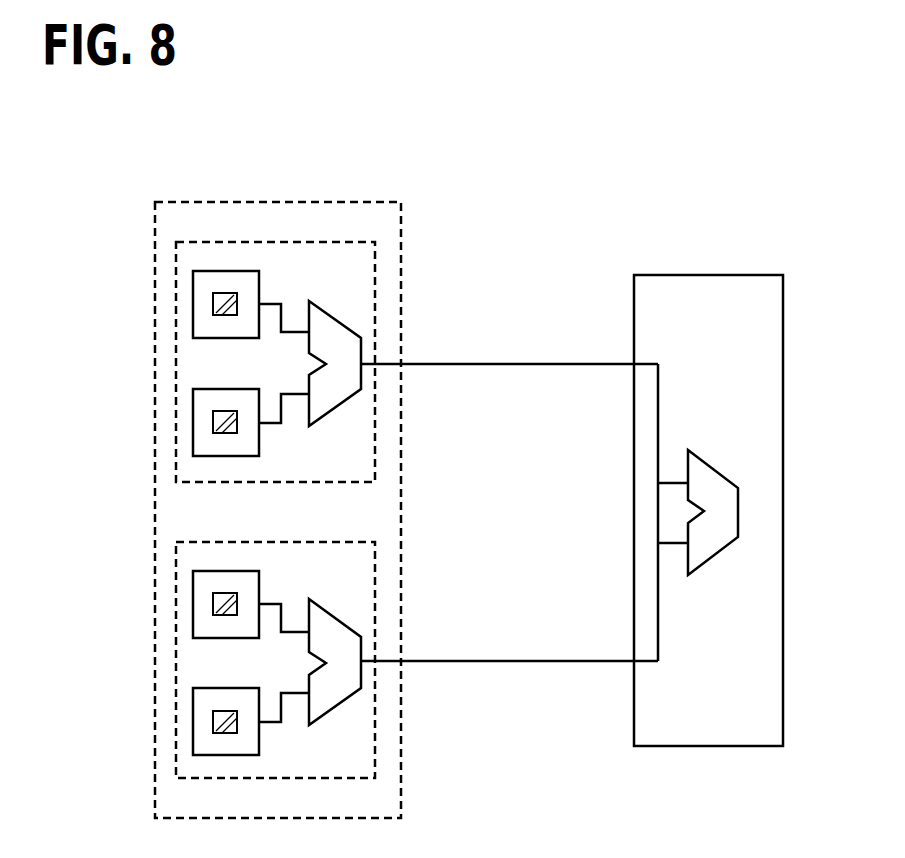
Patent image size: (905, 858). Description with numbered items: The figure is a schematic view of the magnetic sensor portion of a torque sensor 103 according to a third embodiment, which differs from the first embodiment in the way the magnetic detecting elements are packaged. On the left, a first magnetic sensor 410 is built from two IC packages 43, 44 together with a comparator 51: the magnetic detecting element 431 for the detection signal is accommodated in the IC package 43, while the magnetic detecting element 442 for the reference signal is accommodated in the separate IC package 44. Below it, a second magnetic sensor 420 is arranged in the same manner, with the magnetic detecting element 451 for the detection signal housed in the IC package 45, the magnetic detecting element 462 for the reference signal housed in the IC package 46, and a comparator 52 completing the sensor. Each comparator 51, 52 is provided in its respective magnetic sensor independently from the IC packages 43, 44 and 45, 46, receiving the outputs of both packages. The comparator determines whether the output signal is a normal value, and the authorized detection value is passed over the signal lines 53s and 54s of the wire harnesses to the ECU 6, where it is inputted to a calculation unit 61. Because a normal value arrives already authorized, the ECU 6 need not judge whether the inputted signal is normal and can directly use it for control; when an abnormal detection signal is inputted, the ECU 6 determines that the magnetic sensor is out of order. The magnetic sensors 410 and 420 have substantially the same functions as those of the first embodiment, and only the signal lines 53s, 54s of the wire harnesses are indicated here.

The torque sensor 103 is at (282, 202).
The first magnetic sensor 410 is at (262, 242).
The second magnetic sensor 420 is at (262, 542).
The IC package 43 is at (195, 285).
The magnetic detecting element 431 is at (213, 305).
The IC package 44 is at (195, 400).
The magnetic detecting element 442 is at (213, 423).
The IC package 45 is at (195, 585).
The magnetic detecting element 451 is at (213, 605).
The IC package 46 is at (195, 700).
The magnetic detecting element 462 is at (213, 723).
The comparator 51 is at (330, 325).
The comparator 52 is at (330, 625).
The signal line 53s is at (473, 363).
The signal line 54s is at (485, 661).
The ECU 6 is at (720, 275).
The calculation unit 61 is at (725, 475).